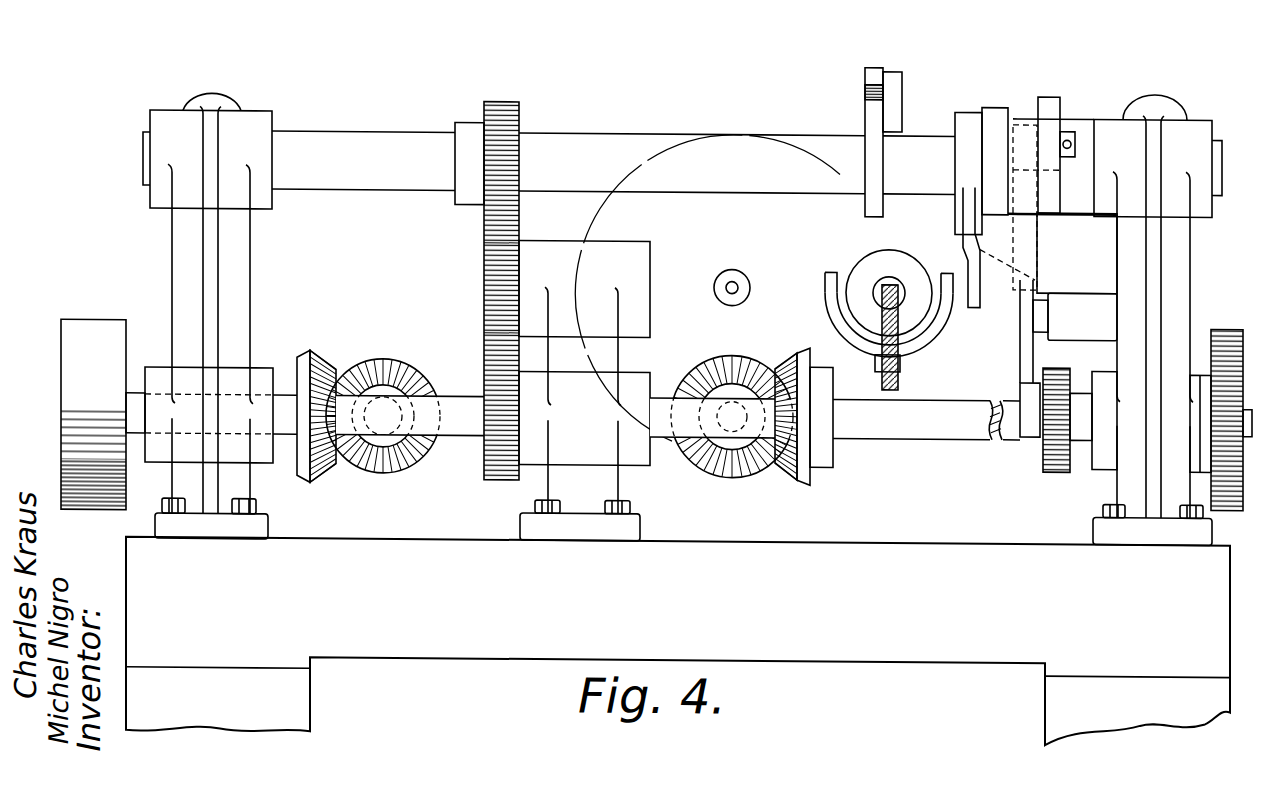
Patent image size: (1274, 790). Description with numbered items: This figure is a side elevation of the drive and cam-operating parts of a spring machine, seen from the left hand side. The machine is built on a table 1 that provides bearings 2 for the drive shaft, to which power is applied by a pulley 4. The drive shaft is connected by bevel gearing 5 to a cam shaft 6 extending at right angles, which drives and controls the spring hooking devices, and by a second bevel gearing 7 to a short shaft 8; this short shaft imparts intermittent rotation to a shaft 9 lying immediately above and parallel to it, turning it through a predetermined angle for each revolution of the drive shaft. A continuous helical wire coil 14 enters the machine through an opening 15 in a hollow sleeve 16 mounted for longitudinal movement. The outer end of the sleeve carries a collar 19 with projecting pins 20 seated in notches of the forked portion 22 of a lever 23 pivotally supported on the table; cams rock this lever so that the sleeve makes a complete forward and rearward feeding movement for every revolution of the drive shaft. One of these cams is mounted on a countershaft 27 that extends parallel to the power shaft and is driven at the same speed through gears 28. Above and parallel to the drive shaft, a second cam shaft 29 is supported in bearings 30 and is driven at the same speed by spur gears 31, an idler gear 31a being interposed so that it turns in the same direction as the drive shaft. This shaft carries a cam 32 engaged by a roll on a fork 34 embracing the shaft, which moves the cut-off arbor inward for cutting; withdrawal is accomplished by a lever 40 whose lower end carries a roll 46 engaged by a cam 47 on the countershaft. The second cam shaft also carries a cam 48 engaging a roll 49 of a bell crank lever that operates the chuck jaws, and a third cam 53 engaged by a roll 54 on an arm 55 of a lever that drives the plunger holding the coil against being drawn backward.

The table 1 is at (505, 600).
The bearings 2 is at (258, 466).
The pulley 4 is at (86, 338).
The bevel gearing 5 is at (348, 365).
The cam shaft 6 is at (393, 398).
The bevel gearing 7 is at (787, 466).
The short shaft 8 is at (727, 440).
The shaft 9 is at (733, 283).
The helical wire coil 14 is at (862, 378).
The opening 15 is at (893, 283).
The hollow sleeve 16 is at (904, 279).
The collar 19 is at (870, 256).
The projecting pins 20 is at (845, 266).
The forked portion 22 is at (835, 290).
The lever 23 is at (889, 334).
The countershaft 27 is at (1022, 430).
The gears 28 is at (1226, 323).
The second cam shaft 29 is at (385, 140).
The bearings 30 is at (232, 118).
The spur gears 31 is at (505, 103).
The idler gear 31a is at (492, 270).
The cam 32 is at (990, 108).
The fork 34 is at (957, 113).
The lever 40 is at (1046, 329).
The roll 46 is at (1045, 420).
The cam 47 is at (1052, 466).
The cam 48 is at (1048, 105).
The roll 49 is at (1048, 115).
The third cam 53 is at (873, 112).
The roll 54 is at (870, 79).
The arm 55 is at (892, 79).